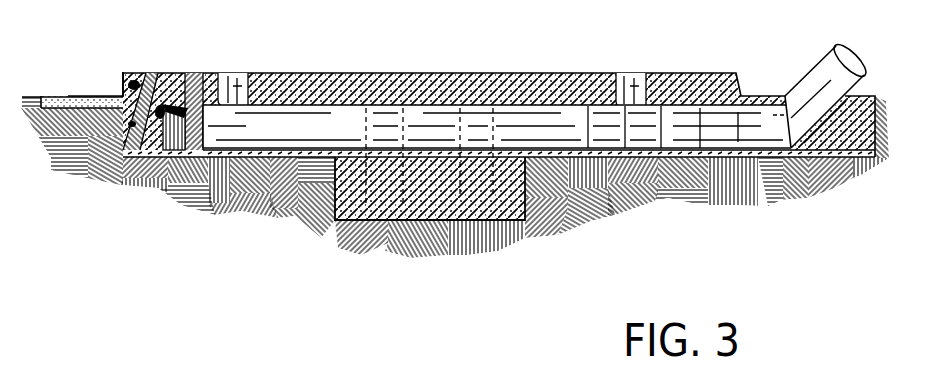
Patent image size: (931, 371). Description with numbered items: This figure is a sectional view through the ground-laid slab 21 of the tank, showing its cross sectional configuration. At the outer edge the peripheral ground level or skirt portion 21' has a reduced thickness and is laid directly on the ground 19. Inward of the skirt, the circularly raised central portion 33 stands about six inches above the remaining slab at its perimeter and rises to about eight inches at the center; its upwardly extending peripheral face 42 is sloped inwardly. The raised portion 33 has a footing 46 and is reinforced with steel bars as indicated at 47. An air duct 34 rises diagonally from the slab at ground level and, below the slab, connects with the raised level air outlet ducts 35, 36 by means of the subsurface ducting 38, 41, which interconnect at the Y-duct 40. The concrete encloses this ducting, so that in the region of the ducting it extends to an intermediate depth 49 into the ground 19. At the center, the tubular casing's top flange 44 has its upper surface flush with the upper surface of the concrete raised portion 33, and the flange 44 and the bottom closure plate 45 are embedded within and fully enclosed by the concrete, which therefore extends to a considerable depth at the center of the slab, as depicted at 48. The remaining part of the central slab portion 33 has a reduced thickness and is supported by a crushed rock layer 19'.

The ground 19 is at (70, 88).
The peripheral ground level or skirt portion 21' is at (95, 83).
The upwardly extending peripheral face 42 is at (115, 76).
The steel bars 47 is at (138, 77).
The crushed rock layer 19' is at (160, 84).
The circularly raised central portion 33 is at (192, 70).
The raised level air outlet duct 36 is at (247, 68).
The top flange 44 is at (335, 66).
The subsurface ducting 41 is at (555, 107).
The Y-duct 40 is at (592, 110).
The raised level air outlet duct 35 is at (627, 68).
The slab 21 is at (510, 121).
The air duct 34 is at (802, 62).
The subsurface ducting 38 is at (763, 147).
The intermediate depth 49 is at (613, 145).
The bottom closure plate 45 is at (492, 253).
The concrete extending to considerable depth 48 is at (344, 237).
The footing 46 is at (117, 177).